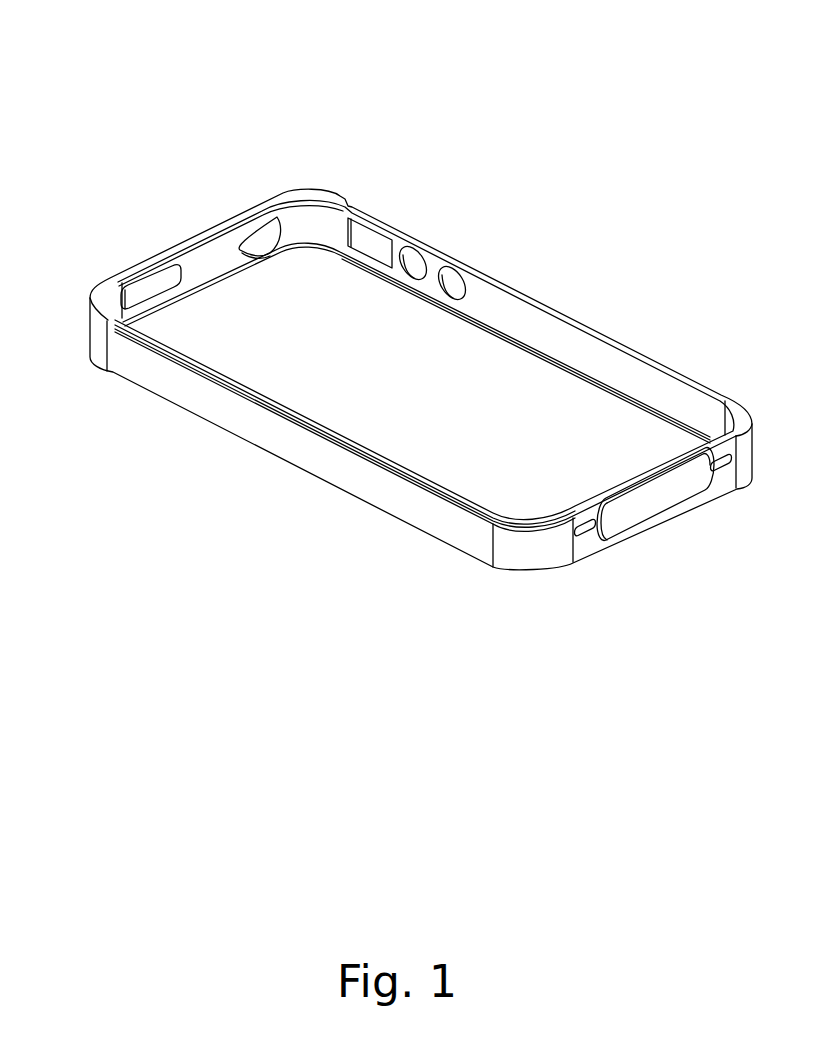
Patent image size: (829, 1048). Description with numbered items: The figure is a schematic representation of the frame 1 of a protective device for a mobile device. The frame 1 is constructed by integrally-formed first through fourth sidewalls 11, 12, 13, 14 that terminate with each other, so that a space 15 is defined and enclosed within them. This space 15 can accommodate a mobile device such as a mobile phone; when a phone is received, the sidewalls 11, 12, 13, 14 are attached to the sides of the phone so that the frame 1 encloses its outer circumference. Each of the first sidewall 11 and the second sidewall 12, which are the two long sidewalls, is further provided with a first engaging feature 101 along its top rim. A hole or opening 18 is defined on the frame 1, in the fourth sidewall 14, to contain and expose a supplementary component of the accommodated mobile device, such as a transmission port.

The frame 1 is at (692, 46).
The first sidewall 11 is at (230, 421).
The second sidewall 12 is at (546, 320).
The third sidewall 13 is at (214, 263).
The fourth sidewall 14 is at (718, 483).
The space 15 is at (460, 357).
The hole or opening 18 is at (652, 502).
The first engaging feature 101 is at (392, 464).